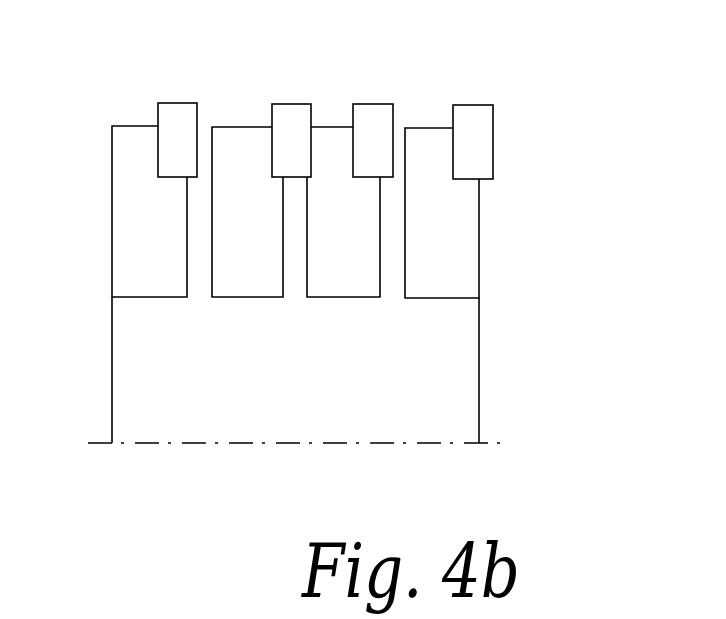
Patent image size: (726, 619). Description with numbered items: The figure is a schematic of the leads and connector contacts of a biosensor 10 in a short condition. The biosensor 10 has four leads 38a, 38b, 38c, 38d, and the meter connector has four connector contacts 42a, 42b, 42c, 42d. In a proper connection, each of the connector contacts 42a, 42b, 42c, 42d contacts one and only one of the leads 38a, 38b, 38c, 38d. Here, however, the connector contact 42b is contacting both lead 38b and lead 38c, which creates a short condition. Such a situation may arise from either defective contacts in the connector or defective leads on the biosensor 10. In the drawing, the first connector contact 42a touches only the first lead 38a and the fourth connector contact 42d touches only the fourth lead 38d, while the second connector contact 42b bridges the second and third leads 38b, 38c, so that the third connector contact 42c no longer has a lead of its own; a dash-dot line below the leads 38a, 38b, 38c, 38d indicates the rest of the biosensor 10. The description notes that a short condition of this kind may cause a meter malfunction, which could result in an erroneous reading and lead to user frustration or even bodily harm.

The biosensor 10 is at (317, 236).
The lead 38a is at (123, 280).
The lead 38b is at (277, 300).
The lead 38c is at (367, 300).
The lead 38d is at (470, 281).
The connector contact 42a is at (158, 106).
The connector contact 42b is at (278, 103).
The connector contact 42c is at (368, 103).
The connector contact 42d is at (493, 118).